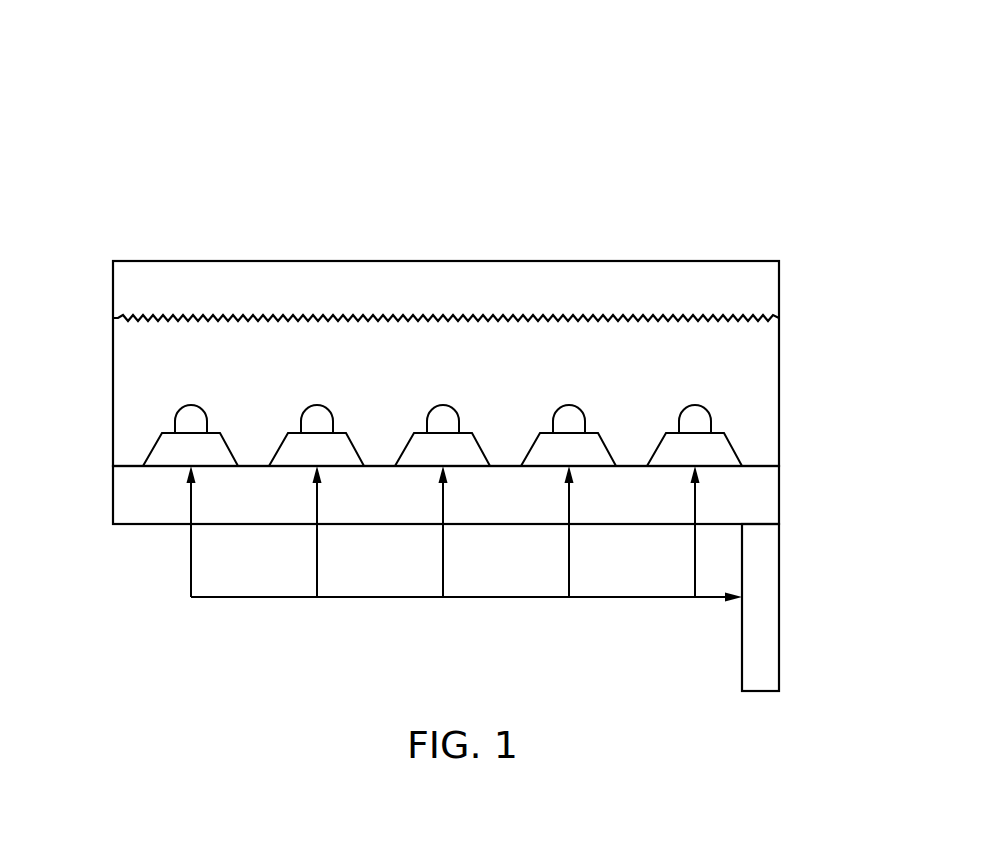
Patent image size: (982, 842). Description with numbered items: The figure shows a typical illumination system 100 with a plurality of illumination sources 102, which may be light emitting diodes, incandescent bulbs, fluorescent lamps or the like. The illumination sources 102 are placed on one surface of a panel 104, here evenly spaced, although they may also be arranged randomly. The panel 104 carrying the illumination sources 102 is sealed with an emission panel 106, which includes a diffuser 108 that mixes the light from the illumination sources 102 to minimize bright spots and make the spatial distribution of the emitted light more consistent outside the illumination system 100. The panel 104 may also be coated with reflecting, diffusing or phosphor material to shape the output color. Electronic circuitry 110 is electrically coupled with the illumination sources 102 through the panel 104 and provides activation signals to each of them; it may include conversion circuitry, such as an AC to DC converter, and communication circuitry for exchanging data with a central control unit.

The illumination system 100 is at (770, 84).
The illumination sources 102 is at (300, 424).
The panel 104 is at (113, 503).
The emission panel 106 is at (502, 261).
The diffuser 108 is at (740, 320).
The electronic circuitry 110 is at (779, 606).